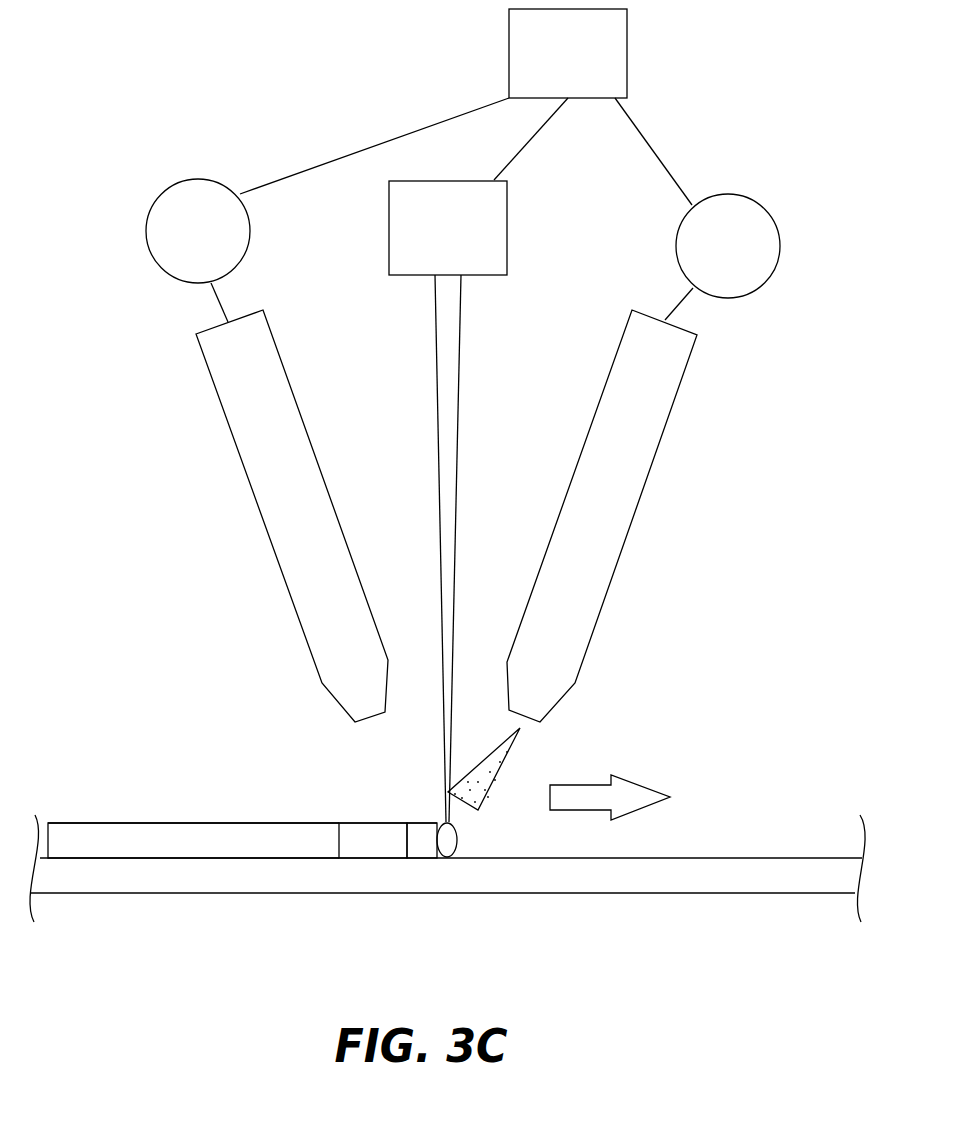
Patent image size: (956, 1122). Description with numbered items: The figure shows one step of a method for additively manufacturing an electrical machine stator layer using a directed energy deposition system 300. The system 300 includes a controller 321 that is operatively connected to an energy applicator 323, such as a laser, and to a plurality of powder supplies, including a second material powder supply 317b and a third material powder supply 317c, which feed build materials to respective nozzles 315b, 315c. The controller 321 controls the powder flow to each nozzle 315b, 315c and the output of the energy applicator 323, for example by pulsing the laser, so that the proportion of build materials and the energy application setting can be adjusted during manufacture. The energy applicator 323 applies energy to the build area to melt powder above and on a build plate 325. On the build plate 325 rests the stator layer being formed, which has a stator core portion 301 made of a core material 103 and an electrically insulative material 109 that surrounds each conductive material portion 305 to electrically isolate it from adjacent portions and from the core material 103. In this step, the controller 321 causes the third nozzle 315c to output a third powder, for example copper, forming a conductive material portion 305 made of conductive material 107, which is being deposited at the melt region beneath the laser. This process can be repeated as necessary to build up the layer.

The directed energy deposition system 300 is at (356, 117).
The controller 321 is at (546, 70).
The energy applicator 323 is at (426, 243).
The second material powder supply 317b is at (231, 248).
The third material powder supply 317c is at (761, 262).
The second nozzle 315b is at (330, 518).
The third nozzle 315c is at (632, 519).
The build plate 325 is at (626, 889).
The core material 103 is at (147, 840).
The stator core portion 301 is at (230, 823).
The electrically insulative material 109 is at (362, 843).
The conductive material 107 is at (422, 843).
The conductive material portion 305 is at (422, 822).